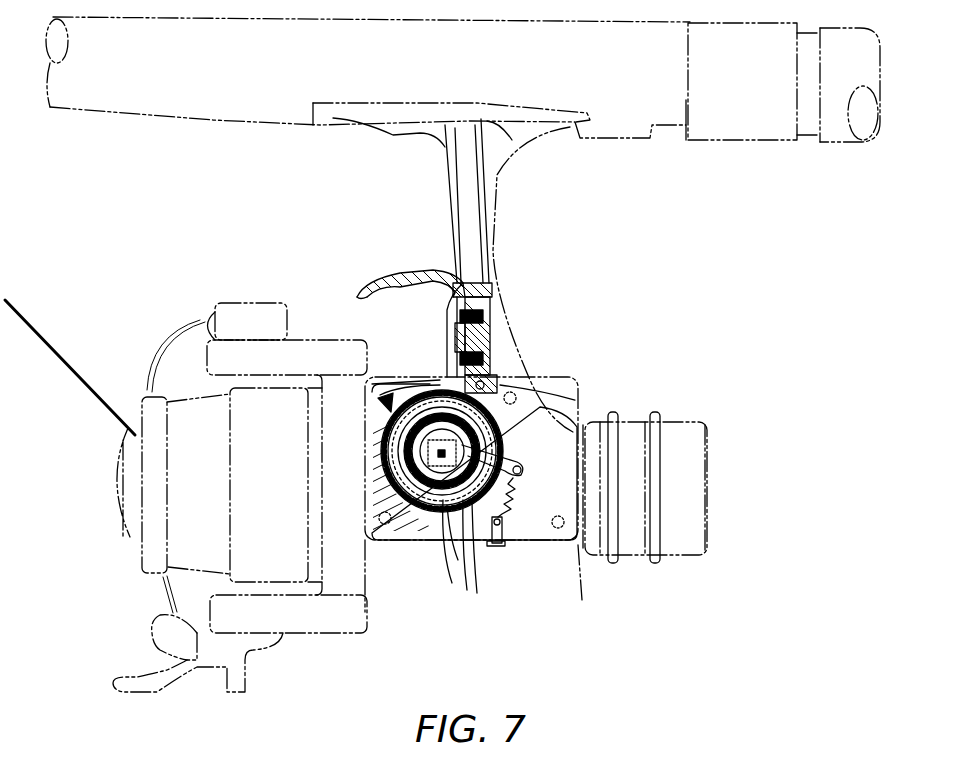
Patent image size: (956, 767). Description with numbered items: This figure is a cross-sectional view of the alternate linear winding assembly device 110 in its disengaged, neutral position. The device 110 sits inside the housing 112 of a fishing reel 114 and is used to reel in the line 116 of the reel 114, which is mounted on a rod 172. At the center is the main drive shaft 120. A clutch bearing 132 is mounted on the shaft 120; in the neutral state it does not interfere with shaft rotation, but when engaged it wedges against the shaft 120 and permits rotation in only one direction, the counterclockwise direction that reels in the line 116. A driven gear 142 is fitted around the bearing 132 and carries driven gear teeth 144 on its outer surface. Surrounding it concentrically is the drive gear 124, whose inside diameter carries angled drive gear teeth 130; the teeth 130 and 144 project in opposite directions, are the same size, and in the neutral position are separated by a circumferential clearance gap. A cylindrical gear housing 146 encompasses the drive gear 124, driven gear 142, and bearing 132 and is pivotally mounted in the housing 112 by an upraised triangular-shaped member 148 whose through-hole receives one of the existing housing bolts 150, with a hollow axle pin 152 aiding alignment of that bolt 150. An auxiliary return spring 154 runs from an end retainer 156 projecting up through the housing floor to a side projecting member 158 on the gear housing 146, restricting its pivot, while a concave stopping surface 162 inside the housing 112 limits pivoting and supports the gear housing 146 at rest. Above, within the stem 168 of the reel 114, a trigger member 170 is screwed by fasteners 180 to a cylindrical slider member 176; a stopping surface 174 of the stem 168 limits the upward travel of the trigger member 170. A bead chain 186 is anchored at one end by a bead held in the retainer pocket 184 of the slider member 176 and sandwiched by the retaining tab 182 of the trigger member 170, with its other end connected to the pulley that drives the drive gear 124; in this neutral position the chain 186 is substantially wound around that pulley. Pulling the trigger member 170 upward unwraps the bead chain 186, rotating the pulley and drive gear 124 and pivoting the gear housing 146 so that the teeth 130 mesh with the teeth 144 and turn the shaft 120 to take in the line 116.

The linear winding assembly device 110 is at (476, 612).
The housing 112 is at (576, 542).
The fishing reel 114 is at (575, 598).
The line 116 is at (72, 371).
The main drive shaft 120 is at (384, 461).
The drive gear 124 is at (464, 596).
The drive gear teeth 130 is at (453, 578).
The clutch bearing 132 is at (521, 470).
The driven gear 142 is at (472, 588).
The driven gear teeth 144 is at (402, 446).
The gear housing 146 is at (448, 543).
The triangular-shaped member 148 is at (378, 416).
The bolt 150 is at (443, 380).
The axle pin 152 is at (447, 378).
The auxiliary return spring 154 is at (508, 512).
The auxiliary spring end retainer 156 is at (497, 547).
The side projecting member 158 is at (481, 443).
The stopping surface 162 is at (380, 503).
The stem 168 is at (494, 210).
The trigger member 170 is at (380, 275).
The rod 172 is at (212, 121).
The stopping surface 174 is at (421, 134).
The slider member 176 is at (487, 286).
The fasteners 180 is at (492, 342).
The bead chain retaining tab 182 is at (457, 362).
The bead chain retainer pocket 184 is at (485, 380).
The bead chain 186 is at (560, 415).